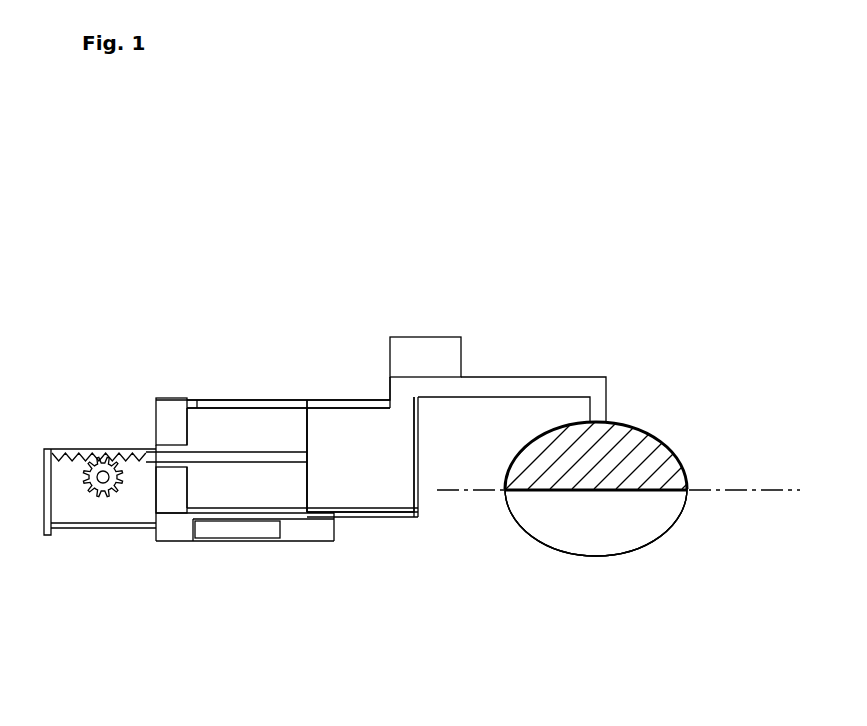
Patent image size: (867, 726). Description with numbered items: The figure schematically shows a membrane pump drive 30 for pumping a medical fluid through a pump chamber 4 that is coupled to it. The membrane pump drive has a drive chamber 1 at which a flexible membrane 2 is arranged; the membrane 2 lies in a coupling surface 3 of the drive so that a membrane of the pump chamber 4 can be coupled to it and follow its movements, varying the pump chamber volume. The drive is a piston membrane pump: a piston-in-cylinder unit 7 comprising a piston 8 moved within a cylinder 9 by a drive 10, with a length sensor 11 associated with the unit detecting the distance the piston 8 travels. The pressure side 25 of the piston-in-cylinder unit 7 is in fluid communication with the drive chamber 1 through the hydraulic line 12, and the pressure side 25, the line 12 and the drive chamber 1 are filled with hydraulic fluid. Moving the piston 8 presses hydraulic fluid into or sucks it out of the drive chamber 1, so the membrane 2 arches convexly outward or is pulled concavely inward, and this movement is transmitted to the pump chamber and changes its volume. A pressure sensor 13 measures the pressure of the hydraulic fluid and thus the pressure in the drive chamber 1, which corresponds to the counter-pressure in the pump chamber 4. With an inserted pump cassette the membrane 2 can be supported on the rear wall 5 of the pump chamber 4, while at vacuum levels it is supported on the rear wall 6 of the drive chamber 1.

The drive chamber 1 is at (660, 467).
The flexible membrane 2 is at (667, 491).
The coupling surface 3 is at (740, 490).
The pump chamber 4 is at (558, 523).
The rear wall of the pump chamber 5 is at (595, 556).
The rear wall of the drive chamber 6 is at (647, 427).
The piston-in-cylinder unit 7 is at (220, 380).
The piston 8 is at (306, 433).
The cylinder 9 is at (318, 398).
The drive 10 is at (104, 451).
The length sensor 11 is at (247, 524).
The hydraulic line 12 is at (541, 377).
The pressure sensor 13 is at (440, 347).
The pressure side 25 is at (375, 465).
The membrane pump drive 30 is at (428, 194).